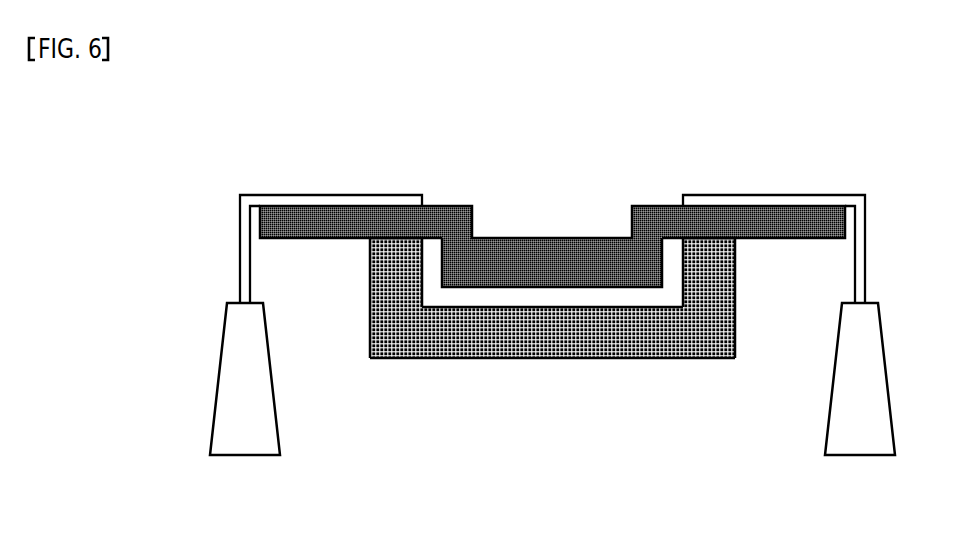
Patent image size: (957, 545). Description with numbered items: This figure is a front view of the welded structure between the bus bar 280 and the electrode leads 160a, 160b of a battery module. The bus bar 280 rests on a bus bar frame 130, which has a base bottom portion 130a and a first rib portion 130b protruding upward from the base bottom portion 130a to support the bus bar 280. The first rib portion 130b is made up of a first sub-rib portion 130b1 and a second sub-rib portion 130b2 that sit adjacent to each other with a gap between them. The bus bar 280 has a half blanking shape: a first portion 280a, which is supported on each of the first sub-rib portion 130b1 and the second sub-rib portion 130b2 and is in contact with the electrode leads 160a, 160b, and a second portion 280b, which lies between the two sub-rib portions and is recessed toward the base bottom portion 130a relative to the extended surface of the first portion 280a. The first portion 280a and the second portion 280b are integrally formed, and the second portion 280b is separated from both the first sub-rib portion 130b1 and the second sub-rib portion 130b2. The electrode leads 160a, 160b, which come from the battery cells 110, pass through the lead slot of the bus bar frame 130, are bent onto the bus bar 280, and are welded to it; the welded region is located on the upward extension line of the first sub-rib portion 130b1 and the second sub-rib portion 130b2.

The battery cell 110 is at (236, 395).
The bus bar frame 130 is at (530, 355).
The base bottom portion 130a is at (422, 336).
The first rib portion 130b is at (531, 350).
The first sub-rib portion 130b1 is at (408, 258).
The second sub-rib portion 130b2 is at (702, 262).
The electrode lead 160a is at (318, 199).
The electrode lead 160b is at (783, 200).
The bus bar 280 is at (552, 209).
The first portion 280a is at (382, 217).
The second portion 280b is at (512, 252).